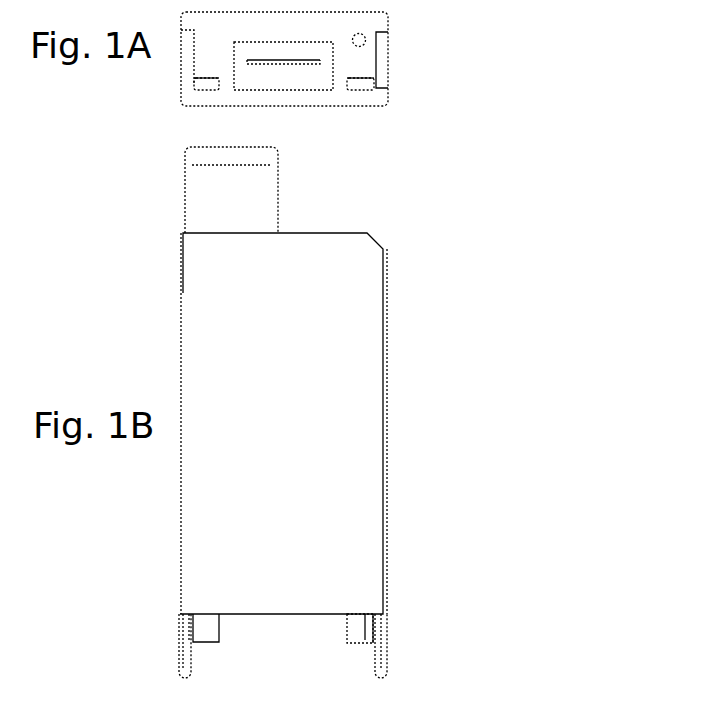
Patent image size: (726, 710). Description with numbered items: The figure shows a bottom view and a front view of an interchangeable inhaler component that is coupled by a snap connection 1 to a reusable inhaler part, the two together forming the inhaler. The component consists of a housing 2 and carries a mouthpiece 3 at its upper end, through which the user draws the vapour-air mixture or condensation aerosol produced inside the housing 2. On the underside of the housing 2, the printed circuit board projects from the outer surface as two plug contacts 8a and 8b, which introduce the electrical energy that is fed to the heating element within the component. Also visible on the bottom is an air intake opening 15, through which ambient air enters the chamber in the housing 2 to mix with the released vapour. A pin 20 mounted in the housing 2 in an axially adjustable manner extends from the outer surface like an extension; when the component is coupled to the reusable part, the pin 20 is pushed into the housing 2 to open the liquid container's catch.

In FIG. 1B, the snap connection 1 is at (183, 658).
In FIG. 1B, the housing 2 is at (360, 402).
In FIG. 1B, the mouthpiece 3 is at (222, 192).
In FIG. 1A, the plug contact 8a is at (360, 86).
In FIG. 1A, the plug contact 8b is at (203, 84).
In FIG. 1B, the plug contact 8b is at (202, 631).
In FIG. 1A, the air intake opening 15 is at (290, 62).
In FIG. 1A, the pin 20 is at (365, 41).
In FIG. 1B, the pin 20 is at (358, 625).